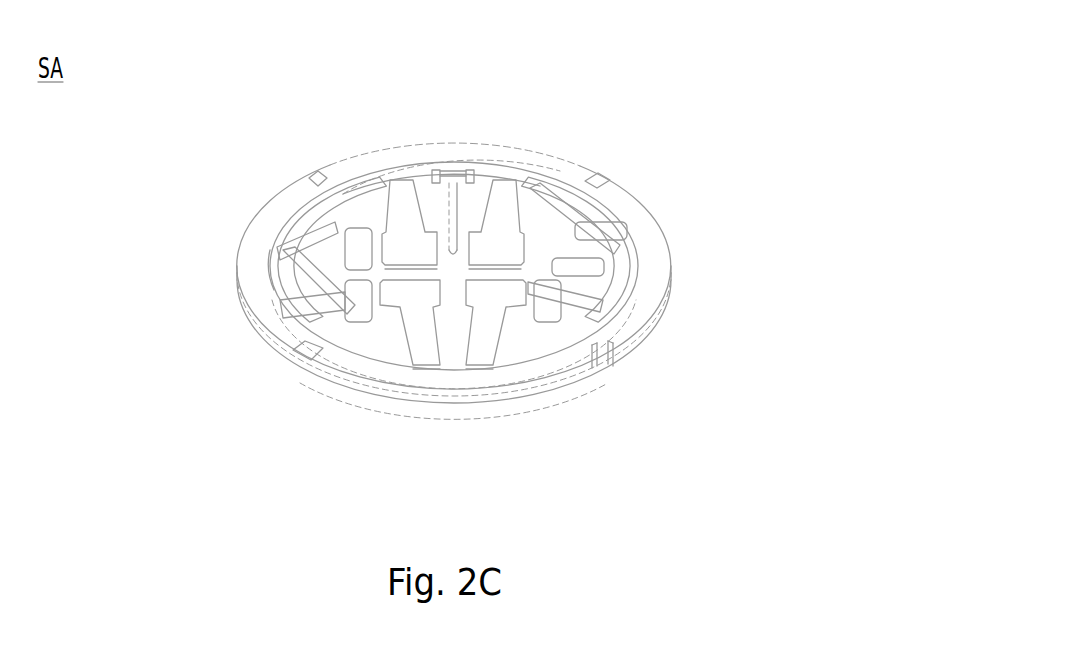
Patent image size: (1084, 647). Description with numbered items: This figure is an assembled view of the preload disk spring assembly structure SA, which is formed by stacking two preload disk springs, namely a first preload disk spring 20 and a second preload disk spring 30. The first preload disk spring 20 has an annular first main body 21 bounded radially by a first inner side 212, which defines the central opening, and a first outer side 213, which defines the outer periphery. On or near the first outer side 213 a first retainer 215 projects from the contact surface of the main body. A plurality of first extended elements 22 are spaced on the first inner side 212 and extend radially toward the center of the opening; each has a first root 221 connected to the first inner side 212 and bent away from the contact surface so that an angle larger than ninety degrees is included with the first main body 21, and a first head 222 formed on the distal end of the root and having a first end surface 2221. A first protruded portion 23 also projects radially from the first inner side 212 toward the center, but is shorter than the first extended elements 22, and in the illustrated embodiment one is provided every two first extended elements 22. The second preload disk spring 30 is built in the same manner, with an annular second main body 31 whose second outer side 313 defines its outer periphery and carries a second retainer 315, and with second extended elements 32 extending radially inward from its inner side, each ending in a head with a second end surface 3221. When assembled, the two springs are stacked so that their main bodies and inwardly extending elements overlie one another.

The first preload disk spring 20 is at (693, 130).
The first main body 21 is at (643, 227).
The first inner side 212 is at (275, 220).
The first outer side 213 is at (668, 286).
The first retainer 215 is at (602, 362).
The first extended element 22 is at (393, 327).
The first root 221 is at (285, 292).
The first head 222 is at (290, 312).
The first end surface 2221 is at (445, 172).
The first protruded portion 23 is at (330, 327).
The second preload disk spring 30 is at (665, 393).
The second main body 31 is at (655, 352).
The second outer side 313 is at (662, 330).
The second retainer 315 is at (597, 174).
The second extended element 32 is at (355, 185).
The second end surface 3221 is at (463, 172).